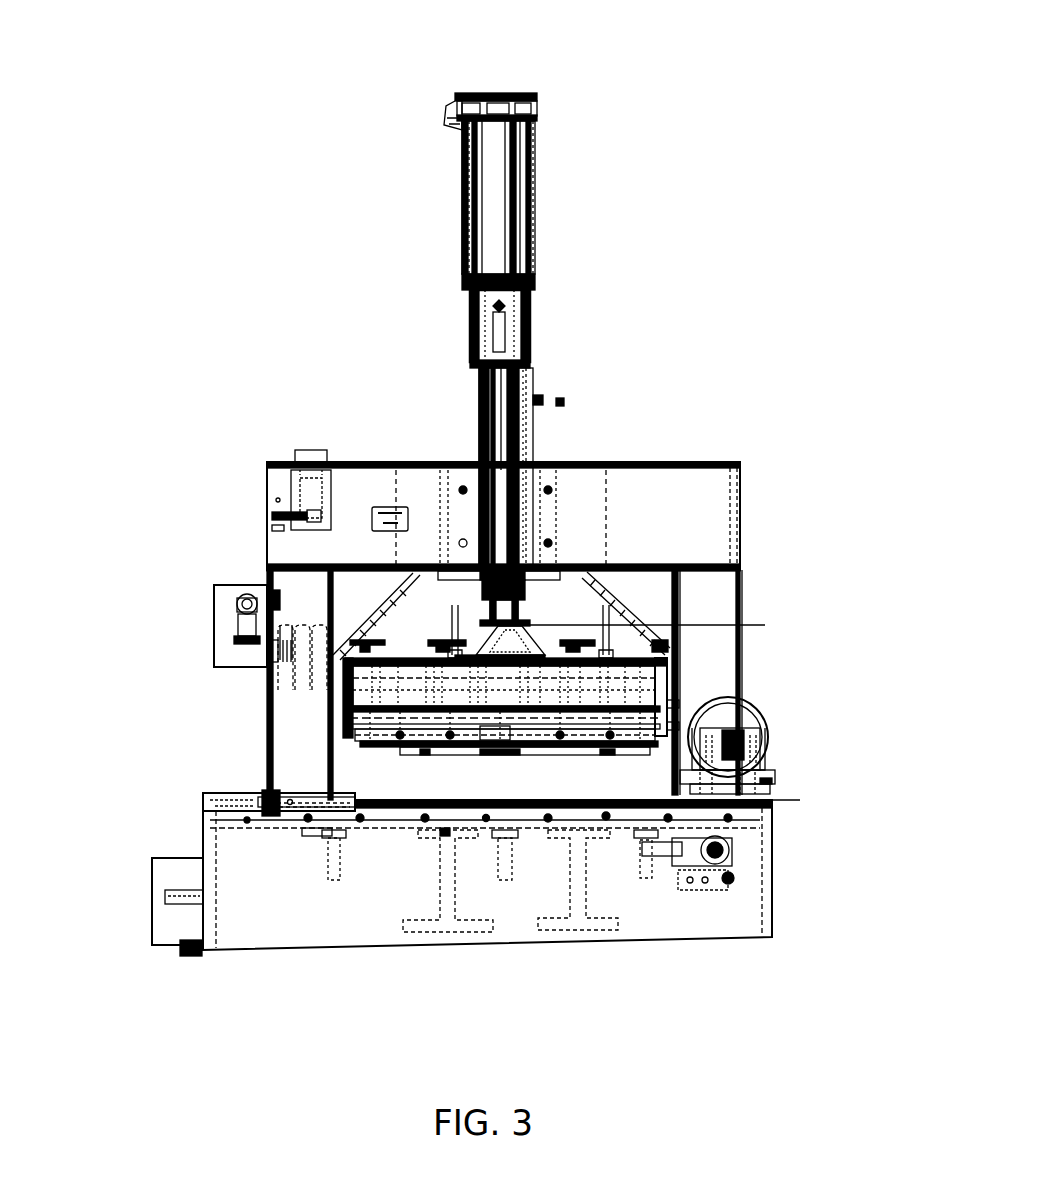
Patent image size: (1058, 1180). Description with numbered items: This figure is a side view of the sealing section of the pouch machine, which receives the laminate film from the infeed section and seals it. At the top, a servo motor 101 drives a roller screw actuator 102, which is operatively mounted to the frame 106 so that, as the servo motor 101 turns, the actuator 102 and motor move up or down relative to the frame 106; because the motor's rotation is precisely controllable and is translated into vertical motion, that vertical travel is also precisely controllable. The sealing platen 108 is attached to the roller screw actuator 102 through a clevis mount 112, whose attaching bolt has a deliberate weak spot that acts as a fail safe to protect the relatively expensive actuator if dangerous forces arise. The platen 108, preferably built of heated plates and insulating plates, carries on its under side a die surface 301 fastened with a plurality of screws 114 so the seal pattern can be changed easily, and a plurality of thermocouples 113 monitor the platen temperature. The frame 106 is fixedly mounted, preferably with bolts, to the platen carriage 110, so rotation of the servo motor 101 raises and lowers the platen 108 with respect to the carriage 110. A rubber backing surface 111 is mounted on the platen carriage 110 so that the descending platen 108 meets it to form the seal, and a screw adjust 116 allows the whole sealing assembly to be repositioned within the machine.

The servo motor 101 is at (503, 92).
The roller screw actuator 102 is at (518, 505).
The frame 106 is at (692, 503).
The thermocouples 113 is at (400, 613).
The screws 114 is at (340, 696).
The clevis mounts 112 is at (765, 625).
The sealing platen 108 is at (662, 674).
The die surface 301 is at (545, 755).
The screw adjust 116 is at (745, 742).
The rubber backing surface 111 is at (385, 802).
The platen carriage 110 is at (692, 917).